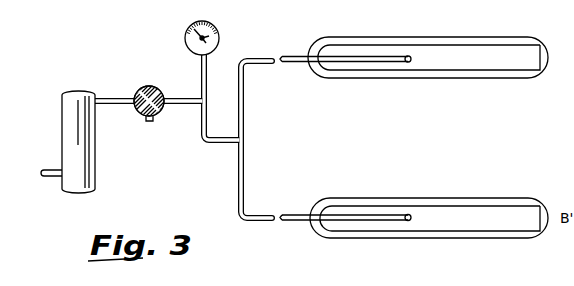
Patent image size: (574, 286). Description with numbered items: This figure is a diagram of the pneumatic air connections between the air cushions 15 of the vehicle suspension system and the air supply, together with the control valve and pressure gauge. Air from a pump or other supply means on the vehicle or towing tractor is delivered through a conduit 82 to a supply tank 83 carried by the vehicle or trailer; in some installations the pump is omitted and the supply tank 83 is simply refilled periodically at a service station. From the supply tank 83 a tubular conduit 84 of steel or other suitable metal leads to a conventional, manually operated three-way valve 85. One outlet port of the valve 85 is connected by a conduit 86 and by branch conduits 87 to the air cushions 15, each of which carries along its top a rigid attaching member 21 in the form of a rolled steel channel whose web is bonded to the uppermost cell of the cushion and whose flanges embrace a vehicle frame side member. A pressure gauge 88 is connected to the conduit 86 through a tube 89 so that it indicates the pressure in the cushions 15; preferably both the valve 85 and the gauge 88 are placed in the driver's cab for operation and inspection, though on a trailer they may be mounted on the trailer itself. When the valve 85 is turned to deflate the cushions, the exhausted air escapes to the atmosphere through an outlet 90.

The air cushion 15 is at (488, 37).
The rigid attaching member 21 is at (470, 62).
The conduit 82 is at (56, 168).
The supply tank 83 is at (88, 139).
The tubular conduit 84 is at (105, 99).
The three-way valve 85 is at (148, 86).
The conduit 86 is at (181, 97).
The branch conduits 87 is at (245, 86).
The pressure gauge 88 is at (217, 32).
The tube 89 is at (206, 72).
The outlet 90 is at (153, 119).